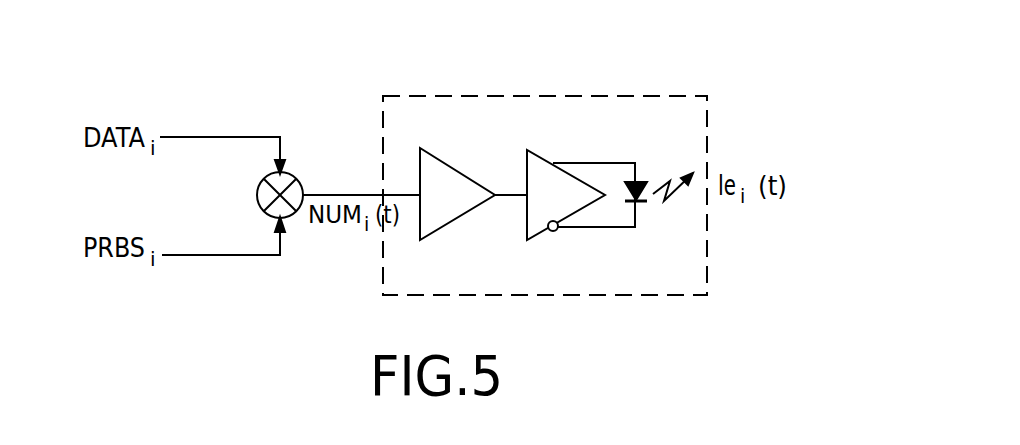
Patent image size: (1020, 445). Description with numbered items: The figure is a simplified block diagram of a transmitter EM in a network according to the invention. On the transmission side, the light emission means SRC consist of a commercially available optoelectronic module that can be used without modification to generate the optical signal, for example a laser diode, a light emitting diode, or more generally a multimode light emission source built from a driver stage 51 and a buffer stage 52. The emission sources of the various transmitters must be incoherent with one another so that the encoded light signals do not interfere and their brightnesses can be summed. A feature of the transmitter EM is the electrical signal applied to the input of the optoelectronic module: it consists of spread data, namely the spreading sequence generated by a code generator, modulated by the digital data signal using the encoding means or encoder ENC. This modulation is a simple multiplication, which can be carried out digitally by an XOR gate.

The buffer stage 52 is at (448, 183).
The driver stage 51 is at (558, 183).
The encoder ENC is at (293, 218).
The transmitter EM is at (335, 73).
The light emission means SRC is at (595, 295).